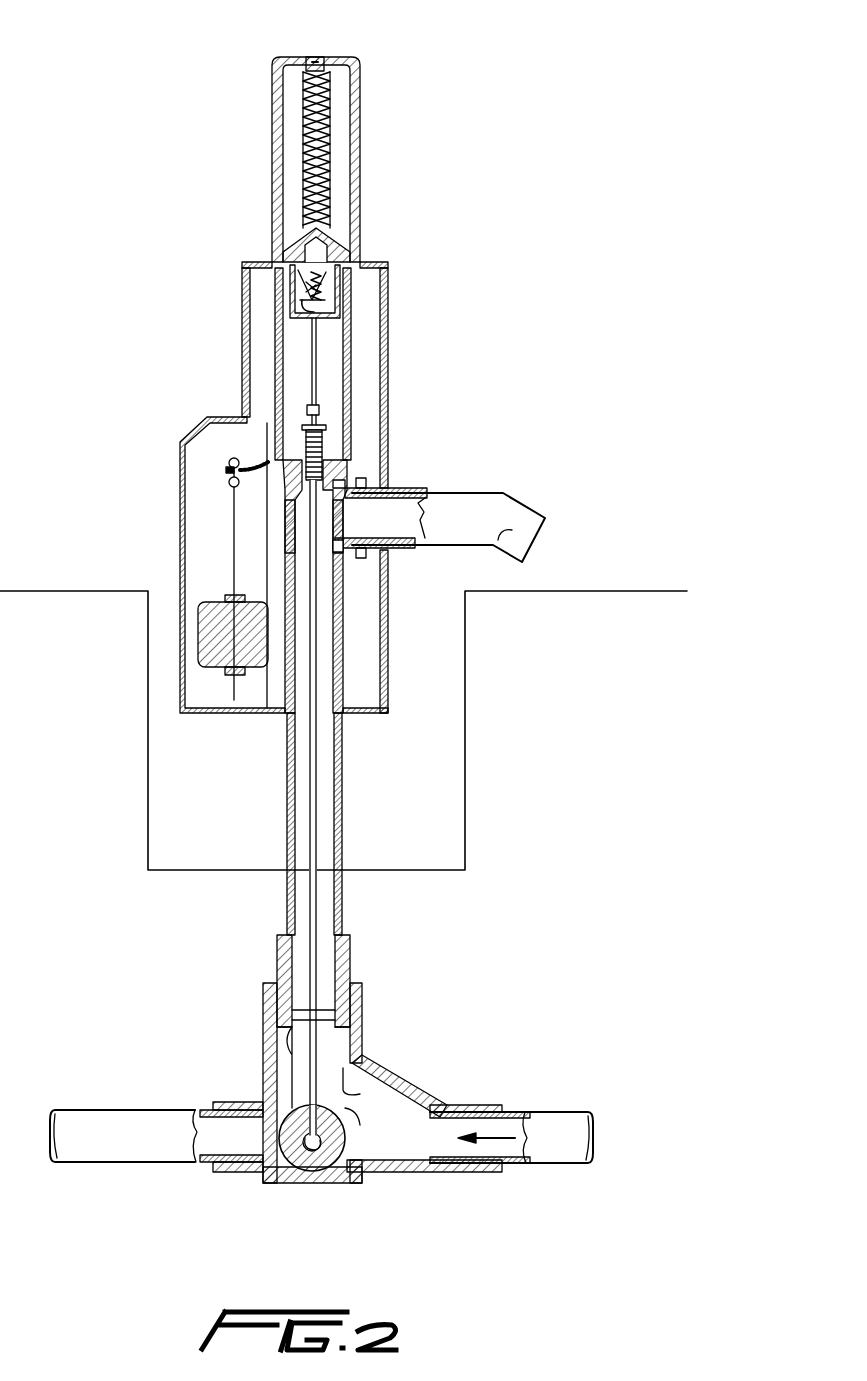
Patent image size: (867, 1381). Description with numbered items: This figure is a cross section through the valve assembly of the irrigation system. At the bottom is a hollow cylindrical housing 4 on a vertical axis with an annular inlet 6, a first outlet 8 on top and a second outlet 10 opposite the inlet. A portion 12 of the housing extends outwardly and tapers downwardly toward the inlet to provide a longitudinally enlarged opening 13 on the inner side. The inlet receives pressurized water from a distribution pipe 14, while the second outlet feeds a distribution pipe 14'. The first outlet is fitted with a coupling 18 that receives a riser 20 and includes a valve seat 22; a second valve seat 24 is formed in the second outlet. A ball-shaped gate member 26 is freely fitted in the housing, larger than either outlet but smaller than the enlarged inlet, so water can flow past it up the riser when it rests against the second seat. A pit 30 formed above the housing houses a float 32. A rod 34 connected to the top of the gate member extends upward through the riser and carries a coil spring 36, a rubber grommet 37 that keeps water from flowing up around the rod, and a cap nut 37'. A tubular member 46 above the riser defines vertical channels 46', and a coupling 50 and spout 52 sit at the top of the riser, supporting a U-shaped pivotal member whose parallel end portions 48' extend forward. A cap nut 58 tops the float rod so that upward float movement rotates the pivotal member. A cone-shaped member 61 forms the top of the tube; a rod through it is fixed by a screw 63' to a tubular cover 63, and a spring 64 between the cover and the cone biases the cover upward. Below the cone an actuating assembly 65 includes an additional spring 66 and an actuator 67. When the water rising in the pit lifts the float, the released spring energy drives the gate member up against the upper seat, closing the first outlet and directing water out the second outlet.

The hollow cylindrical housing 4 is at (352, 1062).
The inlet 6 is at (445, 1172).
The first outlet 8 is at (265, 1073).
The second outlet 10 is at (262, 1140).
The housing portion 12 is at (447, 1103).
The enlarged opening 13 is at (352, 1080).
The distribution pipe 14 is at (529, 1184).
The distribution pipe 14' is at (123, 1178).
The coupling 18 is at (277, 985).
The riser 20 is at (343, 836).
The valve seat 22 is at (298, 1040).
The second valve seat 24 is at (300, 1185).
The ball-shaped gate member 26 is at (350, 1145).
The pit 30 is at (438, 655).
The float 32 is at (200, 635).
The rod 34 is at (310, 828).
The coil spring 36 is at (362, 462).
The rubber grommet 37 is at (227, 506).
The cap nut 37' is at (419, 394).
The tubular member 46 is at (383, 364).
The vertical channels 46' is at (239, 363).
The end portions 48' is at (191, 531).
The coupling 50 is at (285, 522).
The spout 52 is at (503, 493).
The cap nut 58 is at (226, 466).
The cone-shaped member 61 is at (352, 230).
The tubular cover 63 is at (363, 159).
The screw 63' is at (350, 38).
The spring 64 is at (305, 135).
The actuating assembly 65 is at (292, 322).
The additional spring 66 is at (345, 275).
The actuator 67 is at (300, 292).